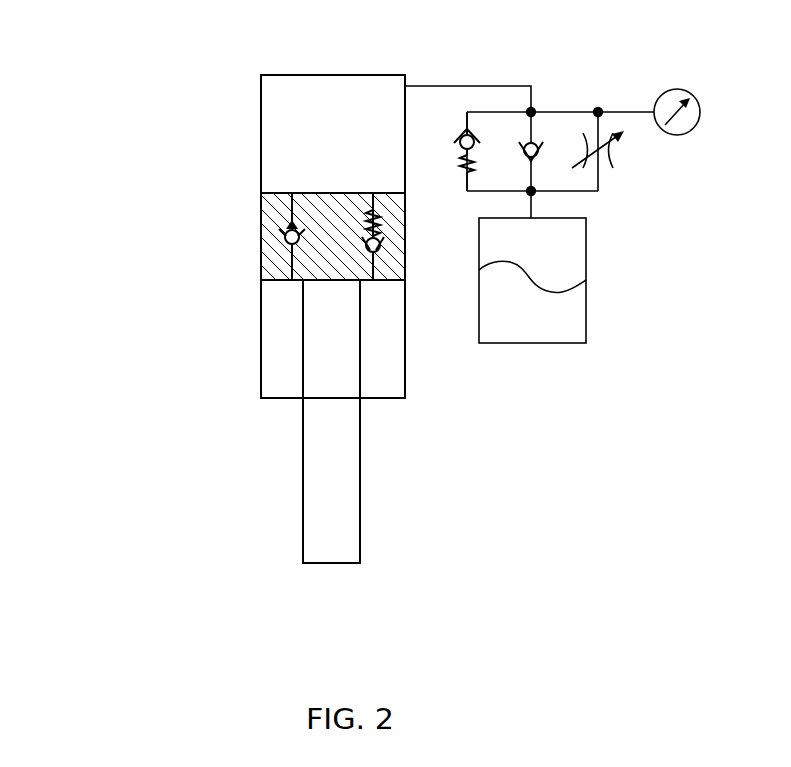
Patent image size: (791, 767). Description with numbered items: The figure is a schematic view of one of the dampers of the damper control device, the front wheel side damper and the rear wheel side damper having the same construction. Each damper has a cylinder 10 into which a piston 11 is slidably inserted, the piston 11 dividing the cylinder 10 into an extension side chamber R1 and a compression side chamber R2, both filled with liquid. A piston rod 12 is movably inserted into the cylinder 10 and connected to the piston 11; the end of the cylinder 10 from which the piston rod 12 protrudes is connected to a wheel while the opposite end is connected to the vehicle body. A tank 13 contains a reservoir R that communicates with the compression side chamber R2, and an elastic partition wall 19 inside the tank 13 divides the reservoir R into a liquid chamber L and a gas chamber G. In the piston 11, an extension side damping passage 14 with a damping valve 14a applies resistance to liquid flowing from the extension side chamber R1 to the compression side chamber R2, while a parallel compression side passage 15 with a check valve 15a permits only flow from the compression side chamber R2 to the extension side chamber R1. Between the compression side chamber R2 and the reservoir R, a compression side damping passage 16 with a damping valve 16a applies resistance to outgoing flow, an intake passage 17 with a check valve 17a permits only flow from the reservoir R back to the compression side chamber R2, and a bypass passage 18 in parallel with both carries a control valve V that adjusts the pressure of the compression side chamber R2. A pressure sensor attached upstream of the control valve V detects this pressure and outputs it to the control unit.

The cylinder 10 is at (261, 100).
The piston 11 is at (261, 203).
The piston rod 12 is at (303, 494).
The tank 13 is at (586, 334).
The extension side damping passage 14 is at (393, 281).
The damping valve 14a is at (381, 247).
The compression side passage 15 is at (275, 268).
The check valve 15a is at (280, 238).
The compression side damping passage 16 is at (483, 110).
The damping valve 16a is at (458, 152).
The intake passage 17 is at (538, 130).
The check valve 17a is at (527, 136).
The bypass passage 18 is at (582, 110).
The elastic partition wall 19 is at (535, 290).
The control valve V is at (605, 160).
The liquid chamber L is at (577, 263).
The gas chamber G is at (573, 306).
The reservoir R is at (670, 232).
The extension side chamber R1 is at (278, 359).
The compression side chamber R2 is at (301, 87).